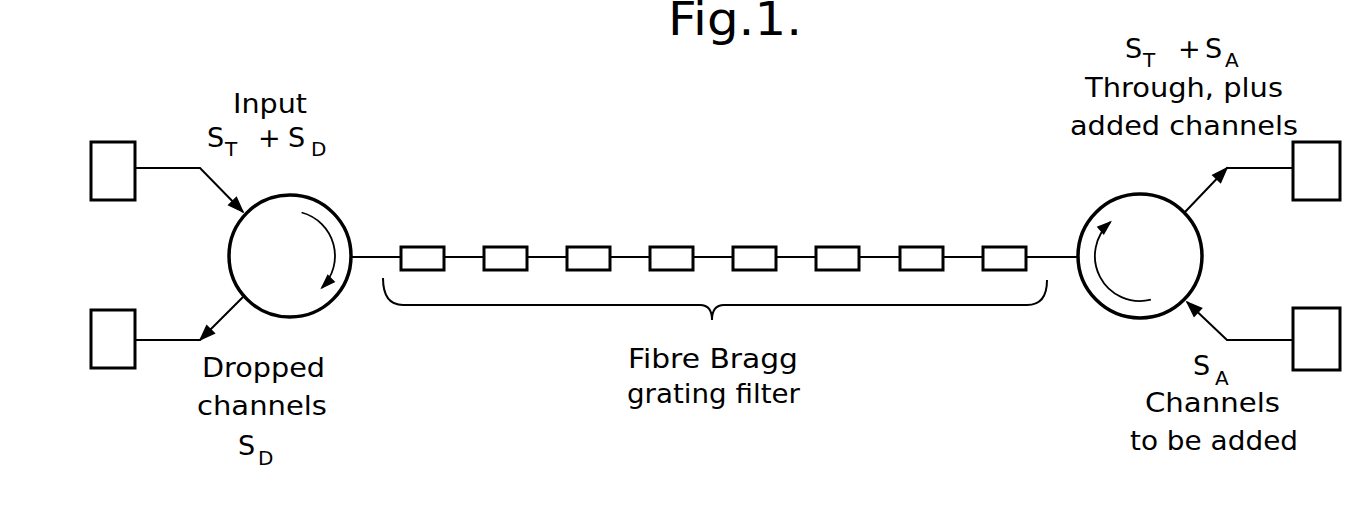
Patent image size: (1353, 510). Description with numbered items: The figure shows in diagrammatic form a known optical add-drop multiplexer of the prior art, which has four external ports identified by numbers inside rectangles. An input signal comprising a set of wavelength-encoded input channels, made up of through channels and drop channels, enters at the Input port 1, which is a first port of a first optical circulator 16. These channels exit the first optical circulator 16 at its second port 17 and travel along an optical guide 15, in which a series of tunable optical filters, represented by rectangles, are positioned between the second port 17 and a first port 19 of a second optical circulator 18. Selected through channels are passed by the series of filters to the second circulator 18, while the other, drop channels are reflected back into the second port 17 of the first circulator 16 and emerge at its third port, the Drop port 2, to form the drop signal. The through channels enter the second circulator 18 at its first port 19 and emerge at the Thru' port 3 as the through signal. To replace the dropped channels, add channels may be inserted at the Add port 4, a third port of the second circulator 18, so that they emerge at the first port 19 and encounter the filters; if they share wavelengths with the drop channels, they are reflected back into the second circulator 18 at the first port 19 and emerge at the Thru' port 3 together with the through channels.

The Input port 1 is at (124, 188).
The Drop port 2 is at (124, 356).
The Thru' port 3 is at (1327, 188).
The Add port 4 is at (1327, 358).
The optical guide 15 is at (720, 245).
The first optical circulator 16 is at (311, 273).
The second port 17 is at (355, 250).
The second optical circulator 18 is at (1159, 274).
The first port 19 is at (1077, 252).